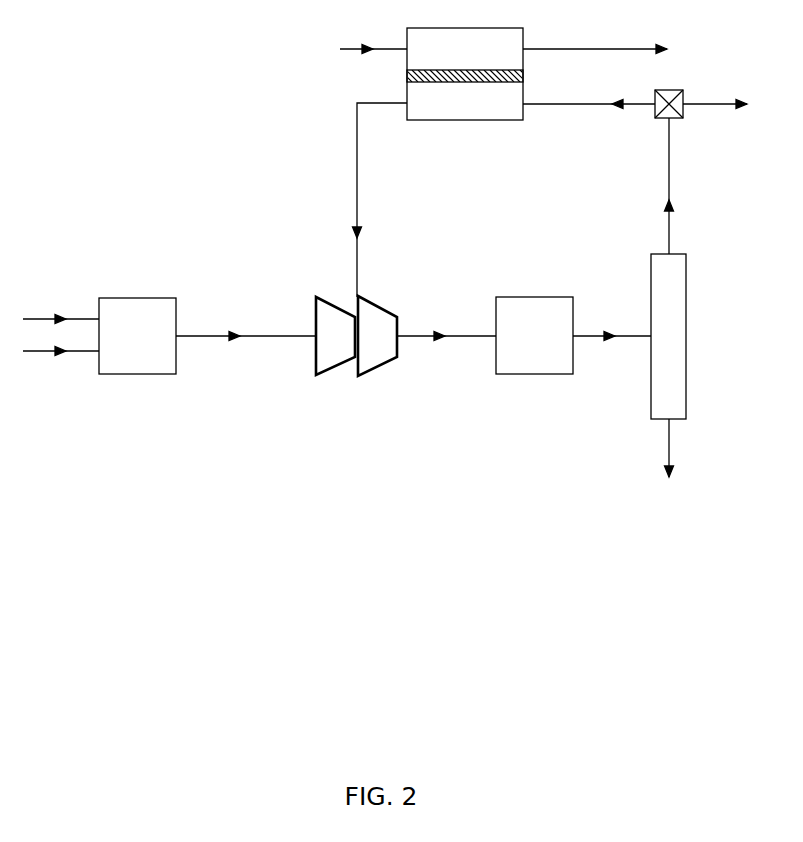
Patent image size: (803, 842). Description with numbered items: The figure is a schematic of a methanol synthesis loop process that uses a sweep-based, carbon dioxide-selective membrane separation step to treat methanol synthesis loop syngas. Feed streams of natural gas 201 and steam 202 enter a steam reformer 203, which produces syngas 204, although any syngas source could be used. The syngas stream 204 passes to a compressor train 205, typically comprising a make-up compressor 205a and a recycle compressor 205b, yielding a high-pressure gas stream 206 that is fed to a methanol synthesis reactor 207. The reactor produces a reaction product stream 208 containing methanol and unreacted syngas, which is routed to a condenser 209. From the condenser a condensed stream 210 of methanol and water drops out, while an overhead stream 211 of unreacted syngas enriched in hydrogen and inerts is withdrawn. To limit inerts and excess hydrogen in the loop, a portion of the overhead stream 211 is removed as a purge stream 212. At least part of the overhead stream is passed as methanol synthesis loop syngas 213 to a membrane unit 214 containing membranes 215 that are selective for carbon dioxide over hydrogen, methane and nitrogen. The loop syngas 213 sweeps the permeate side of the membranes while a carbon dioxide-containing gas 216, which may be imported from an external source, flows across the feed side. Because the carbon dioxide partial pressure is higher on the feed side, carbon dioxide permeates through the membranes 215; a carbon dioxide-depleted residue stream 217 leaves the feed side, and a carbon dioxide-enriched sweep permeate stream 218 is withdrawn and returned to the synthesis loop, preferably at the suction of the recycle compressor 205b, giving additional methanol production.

The natural gas feed stream 201 is at (61, 306).
The steam feed stream 202 is at (61, 366).
The steam reformer 203 is at (136, 374).
The syngas stream 204 is at (246, 350).
The compressor train 205 is at (351, 331).
The make-up compressor 205a is at (332, 302).
The recycle compressor 205b is at (380, 300).
The high-pressure gas stream 206 is at (446, 350).
The methanol synthesis reactor 207 is at (530, 374).
The reaction product stream 208 is at (612, 351).
The condenser 209 is at (686, 292).
The condensed stream 210 is at (669, 463).
The overhead stream 211 is at (690, 186).
The purge stream 212 is at (738, 105).
The methanol synthesis loop syngas 213 is at (603, 113).
The membrane unit 214 is at (470, 120).
The membranes 215 is at (407, 71).
The carbon dioxide-containing gas 216 is at (351, 50).
The carbon dioxide-depleted residue stream 217 is at (617, 50).
The carbon dioxide-enriched sweep permeate stream 218 is at (357, 170).